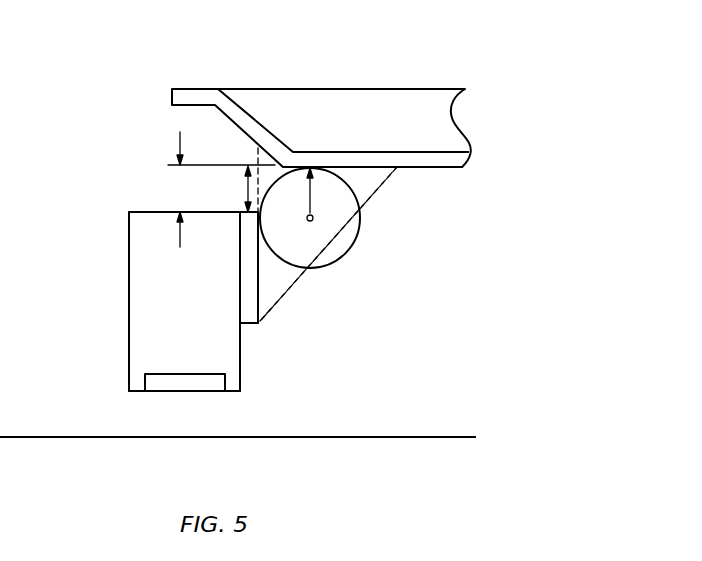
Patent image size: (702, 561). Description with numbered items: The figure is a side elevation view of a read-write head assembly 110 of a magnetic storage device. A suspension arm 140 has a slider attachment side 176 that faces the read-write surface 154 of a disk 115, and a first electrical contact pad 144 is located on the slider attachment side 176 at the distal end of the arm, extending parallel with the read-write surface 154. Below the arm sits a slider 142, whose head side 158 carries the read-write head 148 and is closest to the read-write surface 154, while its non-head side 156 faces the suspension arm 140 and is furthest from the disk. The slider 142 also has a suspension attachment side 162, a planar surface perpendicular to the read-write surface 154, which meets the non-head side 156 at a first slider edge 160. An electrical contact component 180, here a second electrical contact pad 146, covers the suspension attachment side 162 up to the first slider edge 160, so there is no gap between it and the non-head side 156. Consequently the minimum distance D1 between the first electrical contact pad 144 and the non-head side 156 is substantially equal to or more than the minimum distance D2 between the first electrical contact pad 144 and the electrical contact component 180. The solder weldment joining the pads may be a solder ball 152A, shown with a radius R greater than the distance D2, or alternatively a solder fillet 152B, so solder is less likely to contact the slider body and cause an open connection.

The read-write head assembly 110 is at (465, 67).
The disk 115 is at (395, 458).
The suspension arm 140 is at (350, 117).
The slider 142 is at (153, 283).
The first electrical contact pad 144 is at (405, 161).
The second electrical contact pad 146 is at (248, 298).
The read-write head 148 is at (190, 383).
The solder ball 152A is at (337, 238).
The solder fillet 152B is at (308, 248).
The read-write surface 154 is at (355, 437).
The non-head side 156 is at (143, 212).
The head side 158 is at (137, 392).
The first slider edge 160 is at (240, 212).
The suspension attachment side 162 is at (243, 368).
The slider attachment side 176 is at (440, 153).
The electrical contact component 180 is at (268, 329).
The minimum distance between first electrical contact pad and non-head side D1 is at (178, 138).
The minimum distance between first electrical contact pad and electrical contact com D2 is at (246, 192).
The radius of the solder ball R is at (311, 193).